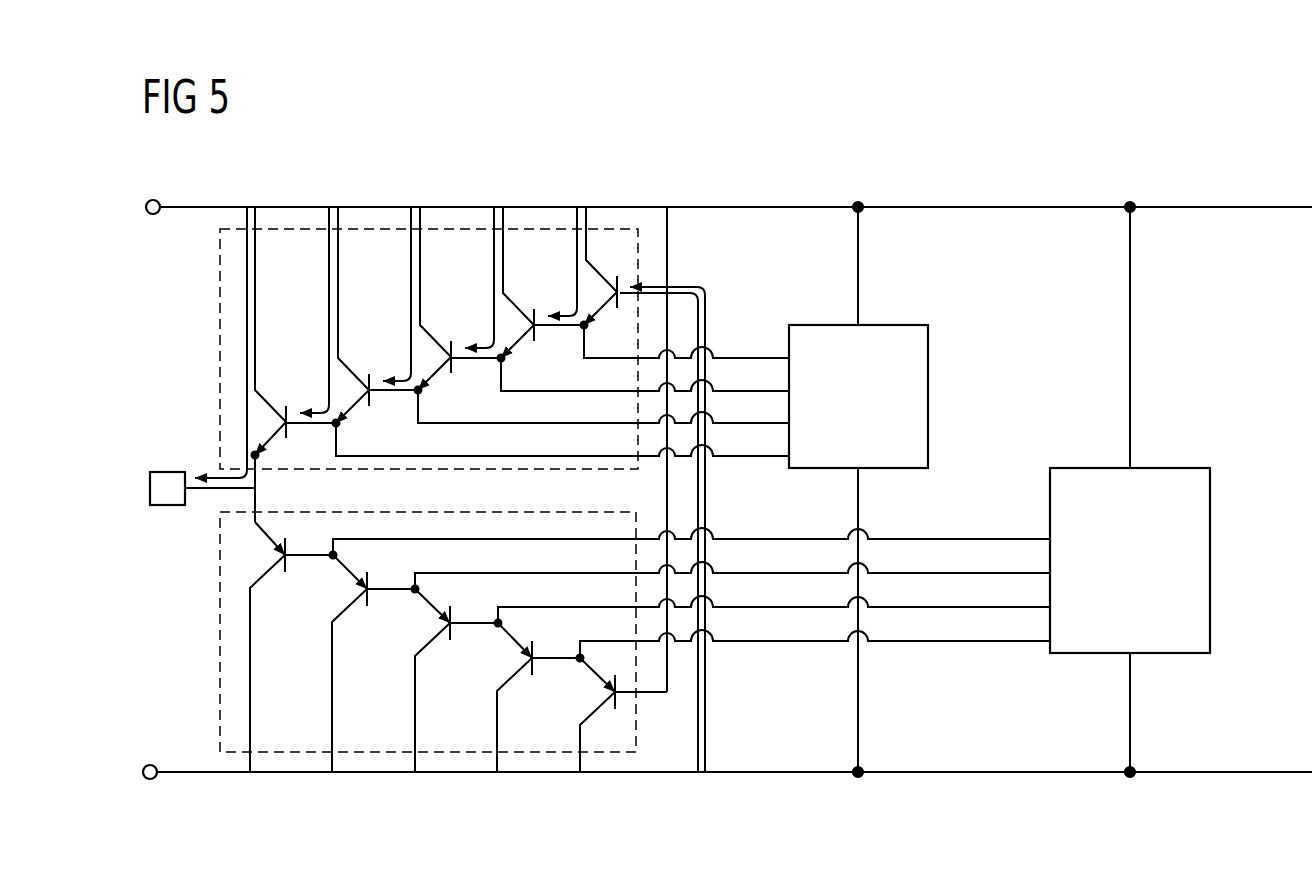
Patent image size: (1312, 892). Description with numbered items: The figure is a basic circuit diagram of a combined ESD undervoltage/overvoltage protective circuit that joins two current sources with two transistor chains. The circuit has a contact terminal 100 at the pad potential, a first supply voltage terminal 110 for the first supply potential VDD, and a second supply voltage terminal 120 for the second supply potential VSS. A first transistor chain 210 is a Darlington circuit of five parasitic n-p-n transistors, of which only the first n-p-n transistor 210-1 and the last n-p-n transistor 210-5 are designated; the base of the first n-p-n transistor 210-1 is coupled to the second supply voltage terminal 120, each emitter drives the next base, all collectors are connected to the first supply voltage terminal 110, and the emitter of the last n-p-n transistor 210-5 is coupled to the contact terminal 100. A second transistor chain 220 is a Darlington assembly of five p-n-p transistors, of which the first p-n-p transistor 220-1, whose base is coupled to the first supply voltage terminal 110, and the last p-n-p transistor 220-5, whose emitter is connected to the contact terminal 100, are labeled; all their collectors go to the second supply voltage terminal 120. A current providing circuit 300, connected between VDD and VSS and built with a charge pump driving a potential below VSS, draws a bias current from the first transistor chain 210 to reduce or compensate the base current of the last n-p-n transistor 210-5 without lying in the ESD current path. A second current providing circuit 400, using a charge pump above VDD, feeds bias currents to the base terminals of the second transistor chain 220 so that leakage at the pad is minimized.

The contact terminal 100 is at (150, 490).
The first supply voltage terminal 110 is at (146, 207).
The second supply voltage terminal 120 is at (143, 772).
The first transistor chain 210 is at (218, 358).
The first n-p-n transistor 210-1 is at (617, 277).
The last n-p-n transistor 210-5 is at (286, 405).
The second transistor chain 220 is at (218, 632).
The first p-n-p transistor 220-1 is at (616, 710).
The last p-n-p transistor 220-5 is at (287, 573).
The current providing circuit 300 is at (930, 394).
The current providing circuit 400 is at (1212, 560).